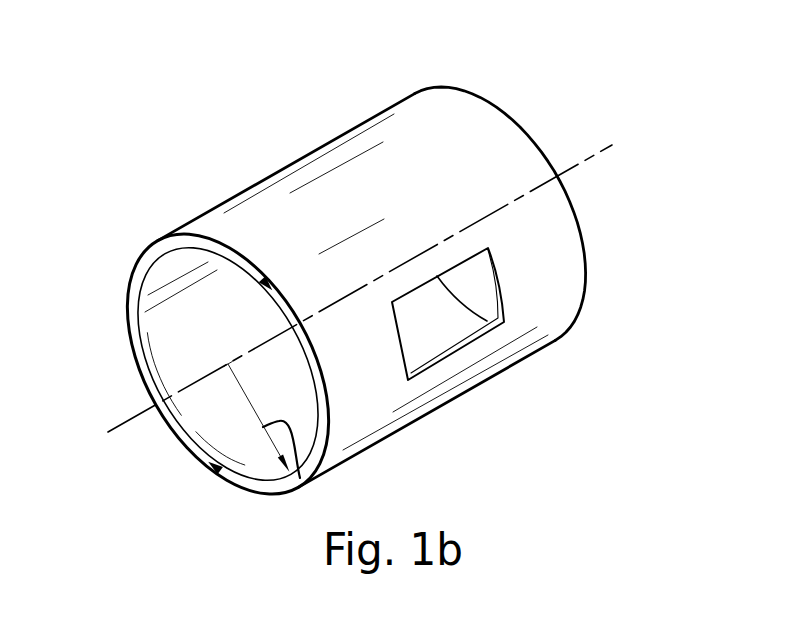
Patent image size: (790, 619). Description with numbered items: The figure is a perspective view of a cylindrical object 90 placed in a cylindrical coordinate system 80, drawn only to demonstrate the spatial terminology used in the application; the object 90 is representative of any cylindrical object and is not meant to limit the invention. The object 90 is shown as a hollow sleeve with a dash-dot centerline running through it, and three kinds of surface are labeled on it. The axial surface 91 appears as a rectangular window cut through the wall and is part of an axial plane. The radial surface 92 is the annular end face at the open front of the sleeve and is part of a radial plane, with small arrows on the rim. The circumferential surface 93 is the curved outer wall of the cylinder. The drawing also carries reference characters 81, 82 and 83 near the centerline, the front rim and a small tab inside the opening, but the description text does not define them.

The cylindrical coordinate system 80 is at (524, 91).
The longitudinal axis 81 is at (110, 432).
The detent tab 82 is at (312, 470).
The front opening edge 83 is at (137, 263).
The object 90 is at (381, 74).
The axial surface 91 is at (477, 335).
The radial surface 92 is at (241, 481).
The circumferential surface 93 is at (333, 188).